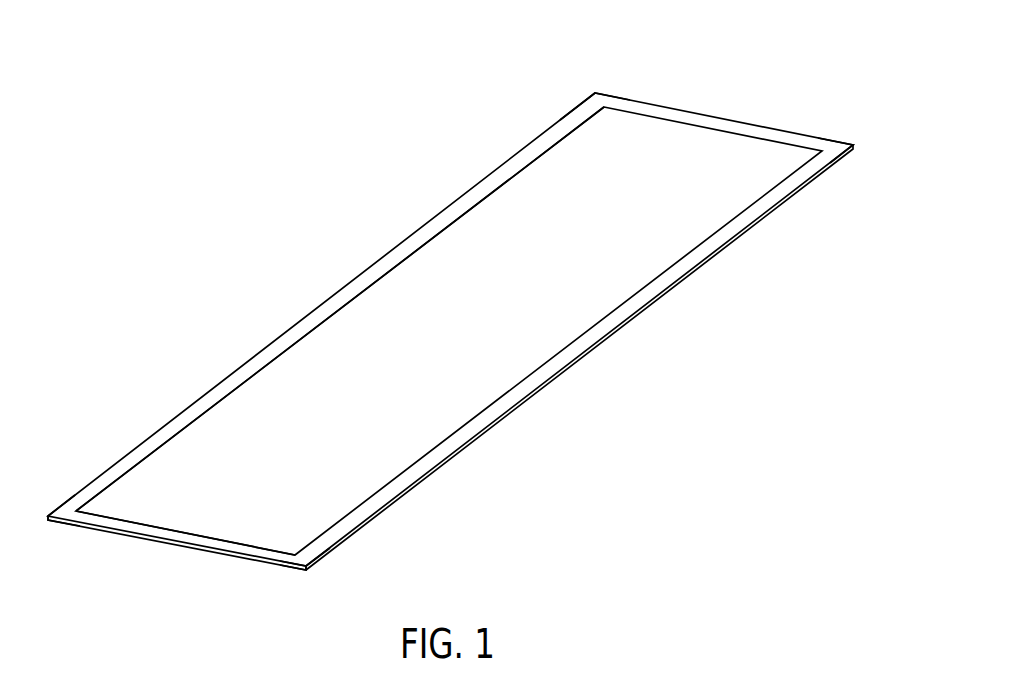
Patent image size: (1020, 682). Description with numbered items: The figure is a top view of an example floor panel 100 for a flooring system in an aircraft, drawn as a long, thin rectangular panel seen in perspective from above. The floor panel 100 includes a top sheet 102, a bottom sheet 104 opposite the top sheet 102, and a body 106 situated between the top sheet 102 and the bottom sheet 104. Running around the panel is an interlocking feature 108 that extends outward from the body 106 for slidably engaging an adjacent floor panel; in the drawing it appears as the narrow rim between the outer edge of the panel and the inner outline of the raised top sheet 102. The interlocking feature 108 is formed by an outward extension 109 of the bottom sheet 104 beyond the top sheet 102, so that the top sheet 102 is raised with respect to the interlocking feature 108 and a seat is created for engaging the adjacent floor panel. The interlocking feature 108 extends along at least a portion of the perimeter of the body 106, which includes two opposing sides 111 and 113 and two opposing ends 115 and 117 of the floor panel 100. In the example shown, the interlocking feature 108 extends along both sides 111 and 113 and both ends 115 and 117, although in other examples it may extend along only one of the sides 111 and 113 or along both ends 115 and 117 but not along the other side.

The floor panel 100 is at (253, 236).
The top sheet 102 is at (210, 432).
The bottom sheet 104 is at (162, 538).
The body 106 is at (235, 548).
The interlocking feature 108 is at (275, 350).
The outward extension 109 is at (51, 531).
The side 111 is at (615, 76).
The side 113 is at (852, 121).
The end 115 is at (859, 160).
The end 117 is at (330, 568).